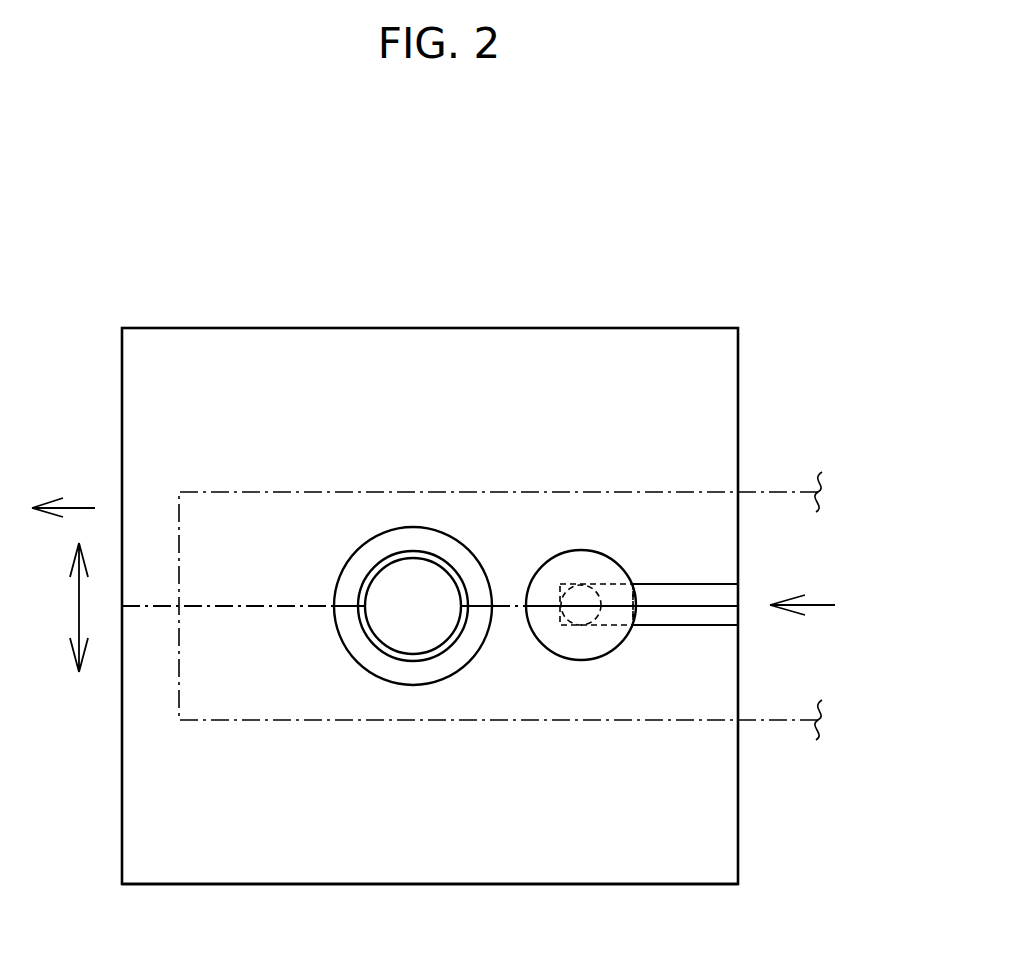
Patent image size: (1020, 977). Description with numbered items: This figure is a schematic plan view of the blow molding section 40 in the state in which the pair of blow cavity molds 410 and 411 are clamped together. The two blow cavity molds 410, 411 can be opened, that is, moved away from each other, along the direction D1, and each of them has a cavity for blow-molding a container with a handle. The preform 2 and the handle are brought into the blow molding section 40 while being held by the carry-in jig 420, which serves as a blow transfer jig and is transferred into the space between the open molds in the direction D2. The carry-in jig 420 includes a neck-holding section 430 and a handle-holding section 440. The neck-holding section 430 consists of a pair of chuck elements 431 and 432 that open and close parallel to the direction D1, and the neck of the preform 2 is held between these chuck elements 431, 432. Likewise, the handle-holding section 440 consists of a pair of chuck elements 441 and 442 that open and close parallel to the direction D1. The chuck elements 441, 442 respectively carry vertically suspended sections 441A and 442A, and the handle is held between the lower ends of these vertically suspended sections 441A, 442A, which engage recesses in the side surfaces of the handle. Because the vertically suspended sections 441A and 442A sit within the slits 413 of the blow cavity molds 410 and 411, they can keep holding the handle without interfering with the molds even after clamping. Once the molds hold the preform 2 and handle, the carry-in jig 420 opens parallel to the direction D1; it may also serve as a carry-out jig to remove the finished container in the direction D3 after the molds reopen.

The blow molding section 40 is at (695, 285).
The blow cavity mold 410 is at (490, 347).
The blow cavity mold 411 is at (490, 867).
The slit 413 is at (680, 593).
The carry-in jig 420 is at (652, 491).
The preform 2 is at (423, 558).
The neck-holding section 430 is at (285, 780).
The chuck element 431 is at (345, 593).
The chuck element 432 is at (390, 672).
The handle-holding section 440 is at (495, 777).
The chuck element 441 is at (547, 589).
The vertically suspended section 441A is at (583, 592).
The chuck element 442 is at (585, 650).
The vertically suspended section 442A is at (592, 615).